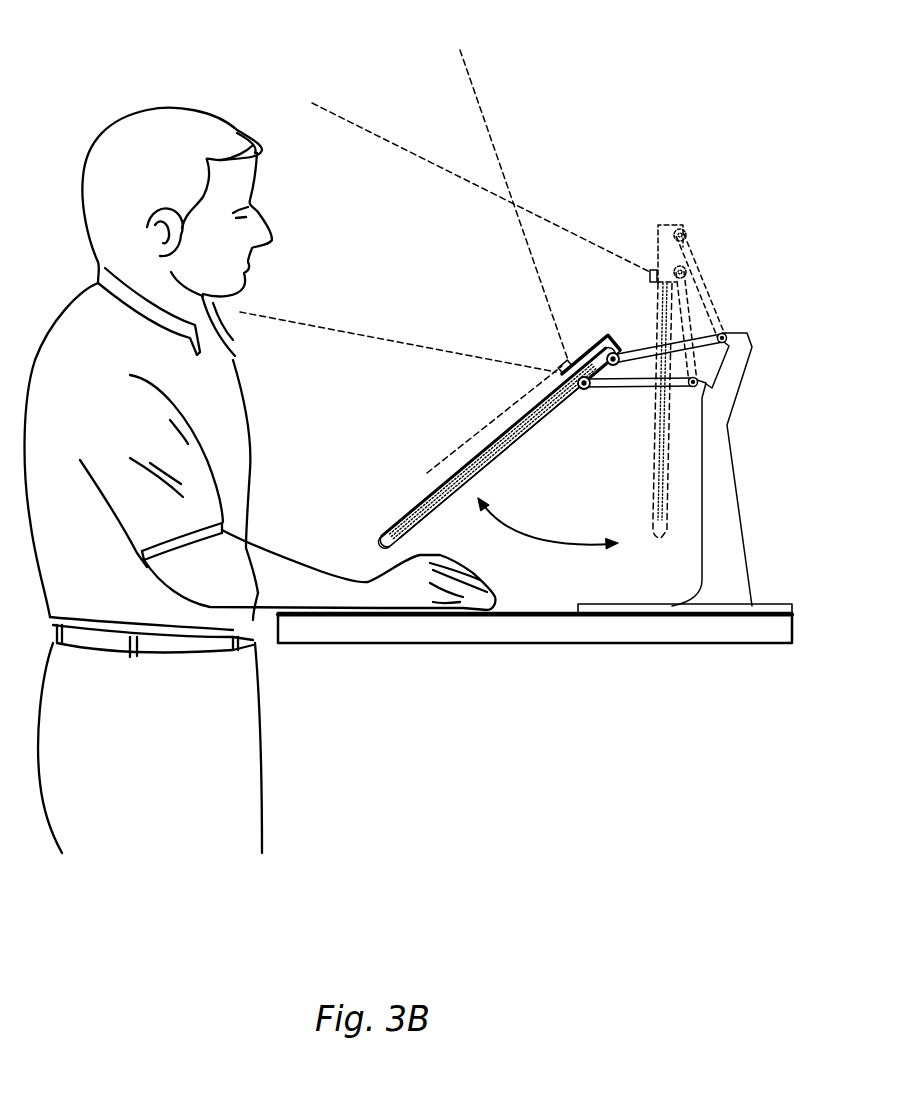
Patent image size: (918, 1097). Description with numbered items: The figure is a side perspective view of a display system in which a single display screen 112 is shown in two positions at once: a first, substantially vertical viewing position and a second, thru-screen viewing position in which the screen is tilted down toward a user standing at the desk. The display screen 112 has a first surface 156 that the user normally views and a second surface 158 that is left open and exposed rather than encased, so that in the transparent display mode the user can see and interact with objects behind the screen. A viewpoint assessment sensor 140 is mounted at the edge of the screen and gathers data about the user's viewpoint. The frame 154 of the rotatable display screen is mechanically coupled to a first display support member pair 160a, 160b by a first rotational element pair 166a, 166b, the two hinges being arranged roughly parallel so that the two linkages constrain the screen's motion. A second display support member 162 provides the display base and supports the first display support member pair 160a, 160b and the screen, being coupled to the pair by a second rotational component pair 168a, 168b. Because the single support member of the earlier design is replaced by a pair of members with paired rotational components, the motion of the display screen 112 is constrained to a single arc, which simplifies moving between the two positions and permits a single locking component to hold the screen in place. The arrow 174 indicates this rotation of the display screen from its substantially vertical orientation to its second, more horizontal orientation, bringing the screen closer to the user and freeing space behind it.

The display screen 112 is at (502, 418).
The viewpoint assessment sensor 140 is at (649, 274).
The frame 154 is at (368, 545).
The first surface 156 is at (453, 470).
The second surface 158 is at (497, 457).
The first display support member 160a is at (685, 308).
The first display support member 160b is at (685, 328).
The second display support member 162 is at (733, 520).
The first rotational element 166a is at (687, 232).
The first rotational element 166b is at (685, 268).
The second rotational component 168a is at (727, 338).
The second rotational component 168b is at (698, 382).
The second arrow 174 is at (521, 535).